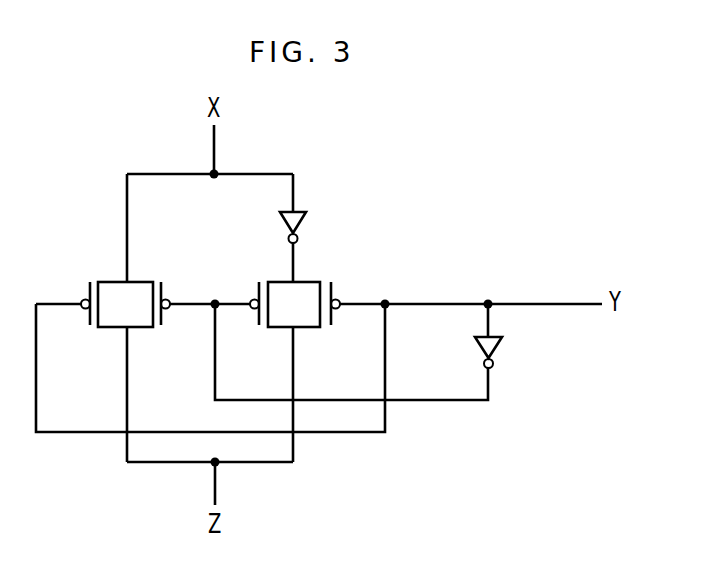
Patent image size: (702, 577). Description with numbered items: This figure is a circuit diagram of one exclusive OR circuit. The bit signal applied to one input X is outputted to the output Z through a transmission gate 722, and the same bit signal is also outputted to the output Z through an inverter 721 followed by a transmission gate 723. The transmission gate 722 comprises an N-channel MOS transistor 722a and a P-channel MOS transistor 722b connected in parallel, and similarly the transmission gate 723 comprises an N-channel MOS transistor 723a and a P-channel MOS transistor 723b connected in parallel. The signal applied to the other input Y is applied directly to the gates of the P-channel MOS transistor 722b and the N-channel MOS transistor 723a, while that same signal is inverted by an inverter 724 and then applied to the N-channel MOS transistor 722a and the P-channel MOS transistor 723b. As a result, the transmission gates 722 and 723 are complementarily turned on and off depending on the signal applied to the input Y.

The inverter 721 is at (292, 220).
The transmission gate 722 is at (125, 303).
The N-channel MOS transistor 722a is at (157, 328).
The P-channel MOS transistor 722b is at (97, 328).
The transmission gate 723 is at (307, 307).
The N-channel MOS transistor 723a is at (328, 328).
The P-channel MOS transistor 723b is at (262, 328).
The inverter 724 is at (489, 343).